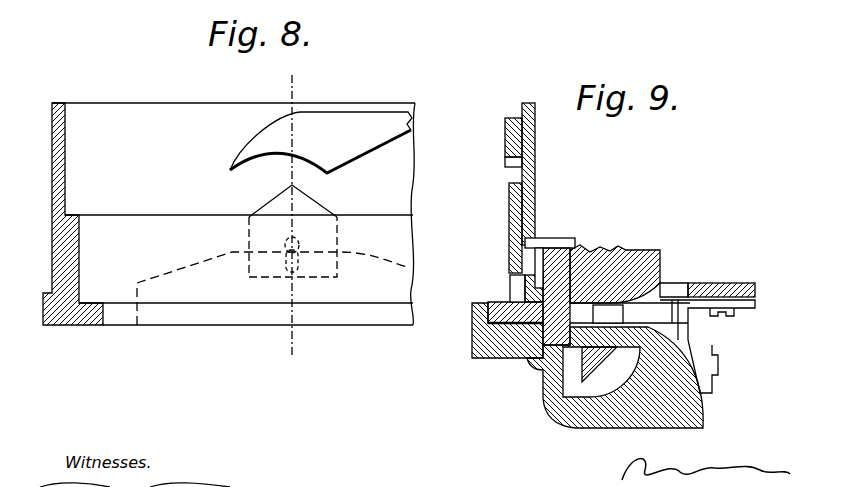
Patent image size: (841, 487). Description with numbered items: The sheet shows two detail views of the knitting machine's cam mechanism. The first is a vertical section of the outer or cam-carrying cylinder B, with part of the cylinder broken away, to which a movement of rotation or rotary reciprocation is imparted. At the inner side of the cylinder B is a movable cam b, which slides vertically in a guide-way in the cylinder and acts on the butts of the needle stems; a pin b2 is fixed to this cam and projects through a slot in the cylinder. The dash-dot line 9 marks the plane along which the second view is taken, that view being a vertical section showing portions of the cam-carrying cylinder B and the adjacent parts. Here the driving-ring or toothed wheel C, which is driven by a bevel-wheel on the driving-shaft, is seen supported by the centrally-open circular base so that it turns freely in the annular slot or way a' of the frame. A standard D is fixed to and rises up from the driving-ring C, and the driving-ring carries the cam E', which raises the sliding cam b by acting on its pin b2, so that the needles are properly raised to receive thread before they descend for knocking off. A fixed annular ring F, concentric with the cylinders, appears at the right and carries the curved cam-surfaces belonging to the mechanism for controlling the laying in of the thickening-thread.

In FIG. 8, the outer or cam-carrying cylinder B is at (73, 214).
In FIG. 9, the outer or cam-carrying cylinder B is at (527, 174).
In FIG. 8, the line 9 9 is at (328, 75).
In FIG. 8, the movable cam b is at (293, 201).
In FIG. 9, the movable cam b is at (509, 203).
In FIG. 8, the pin b2 is at (283, 251).
In FIG. 9, the pin b2 is at (556, 240).
In FIG. 8, the cam E' is at (273, 288).
In FIG. 9, the cam E' is at (566, 292).
In FIG. 9, the standard D is at (615, 274).
In FIG. 9, the driving-ring or toothed wheel C is at (622, 332).
In FIG. 9, the fixed annular ring F is at (725, 283).
In FIG. 9, the annular slot or way a' is at (615, 377).